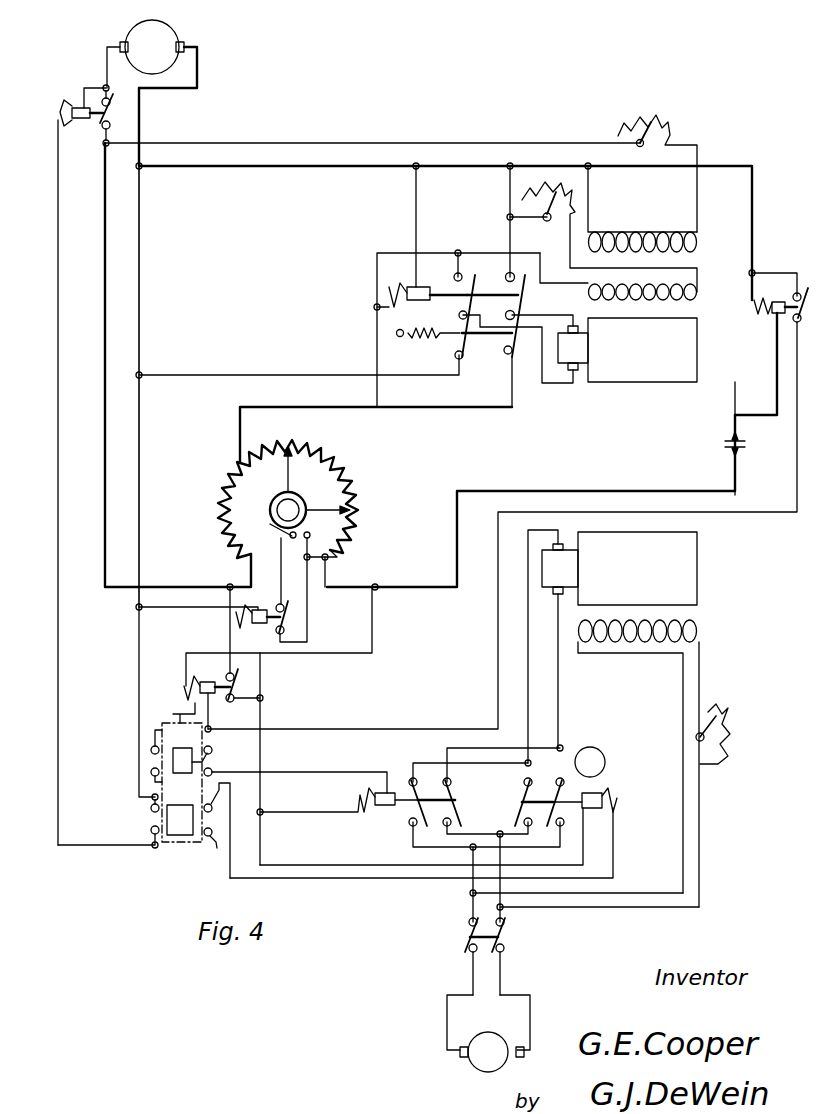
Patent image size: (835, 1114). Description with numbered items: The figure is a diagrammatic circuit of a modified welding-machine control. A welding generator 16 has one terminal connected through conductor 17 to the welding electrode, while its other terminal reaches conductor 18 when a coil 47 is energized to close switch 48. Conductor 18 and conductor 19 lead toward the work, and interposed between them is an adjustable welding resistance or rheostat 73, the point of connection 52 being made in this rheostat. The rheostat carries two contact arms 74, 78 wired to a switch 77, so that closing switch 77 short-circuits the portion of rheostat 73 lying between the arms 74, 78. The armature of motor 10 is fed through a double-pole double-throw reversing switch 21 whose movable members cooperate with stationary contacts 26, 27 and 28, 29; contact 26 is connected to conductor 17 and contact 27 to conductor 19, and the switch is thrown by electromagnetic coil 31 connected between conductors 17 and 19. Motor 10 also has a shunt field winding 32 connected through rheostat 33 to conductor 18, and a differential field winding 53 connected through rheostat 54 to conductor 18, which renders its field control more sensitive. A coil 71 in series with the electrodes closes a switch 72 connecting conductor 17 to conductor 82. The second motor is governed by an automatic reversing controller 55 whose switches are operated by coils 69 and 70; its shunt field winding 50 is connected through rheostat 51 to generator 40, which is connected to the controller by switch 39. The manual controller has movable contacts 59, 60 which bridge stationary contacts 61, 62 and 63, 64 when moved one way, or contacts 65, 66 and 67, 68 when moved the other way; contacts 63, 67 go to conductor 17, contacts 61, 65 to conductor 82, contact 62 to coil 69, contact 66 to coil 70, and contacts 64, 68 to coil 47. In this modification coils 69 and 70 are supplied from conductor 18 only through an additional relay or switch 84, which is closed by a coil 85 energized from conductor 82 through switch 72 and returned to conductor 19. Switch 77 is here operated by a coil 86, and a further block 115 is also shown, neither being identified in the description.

The welding generator 16 is at (173, 40).
The coil 47 is at (68, 104).
The switch 48 is at (112, 106).
The conductor 18 is at (104, 447).
The conductor 17 is at (720, 168).
The rheostat 54 is at (663, 127).
The differential field winding 53 is at (651, 232).
The rheostat 33 is at (562, 197).
The shunt field winding 32 is at (697, 297).
The electromagnetic coil 31 is at (401, 284).
The stationary contact 27 is at (454, 277).
The stationary contact 26 is at (506, 276).
The reversing switch 21 is at (520, 298).
The stationary contact 29 is at (454, 355).
The stationary contact 28 is at (504, 354).
The motor 10 is at (642, 382).
The coil 71 is at (757, 316).
The switch 72 is at (788, 301).
The conductor 19 is at (542, 492).
The conductor 82 is at (385, 729).
The control unit 115 is at (697, 557).
The shunt field winding 50 is at (700, 627).
The rheostat 51 is at (729, 723).
The automatic reversing controller 55 is at (509, 797).
The coil 69 is at (375, 811).
The coil 70 is at (606, 795).
The switch 39 is at (503, 938).
The generator 40 is at (481, 1071).
The point of connection 52 is at (238, 470).
The adjustable welding resistance 73 is at (326, 455).
The contact arm 74 is at (287, 478).
The contact arm 78 is at (322, 509).
The relay coil 86 is at (258, 609).
The switch 77 is at (290, 610).
The coil 85 is at (186, 688).
The relay switch 84 is at (237, 678).
The stationary contact 61 is at (212, 731).
The movable contact 59 is at (201, 759).
The stationary contact 62 is at (226, 770).
The stationary contact 63 is at (214, 806).
The stationary contact 64 is at (217, 849).
The movable contact 60 is at (182, 838).
The stationary contact 65 is at (151, 750).
The stationary contact 66 is at (151, 772).
The stationary contact 67 is at (151, 808).
The stationary contact 68 is at (151, 831).